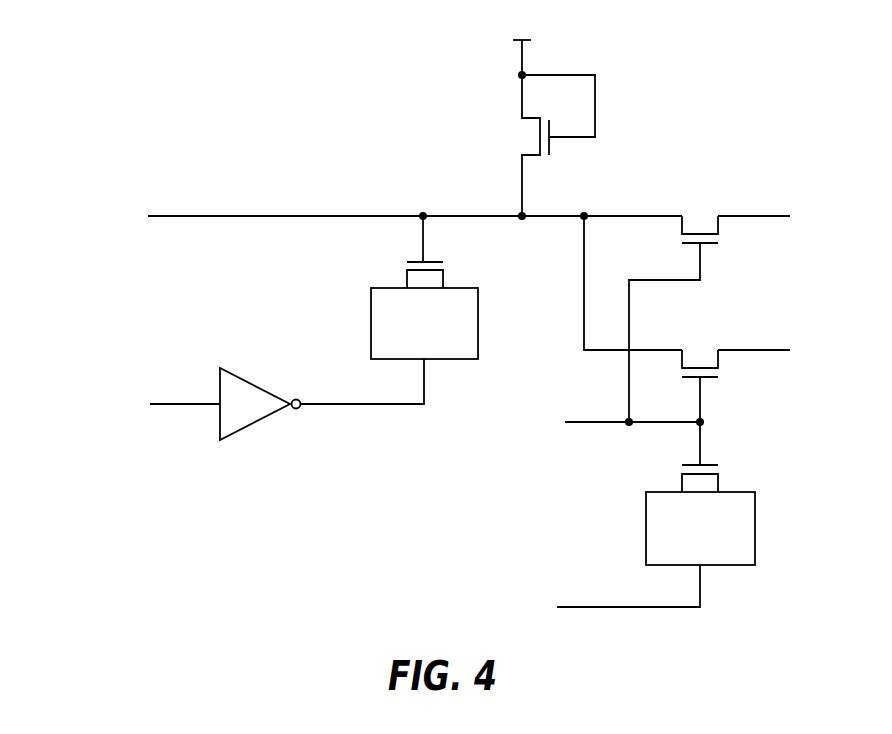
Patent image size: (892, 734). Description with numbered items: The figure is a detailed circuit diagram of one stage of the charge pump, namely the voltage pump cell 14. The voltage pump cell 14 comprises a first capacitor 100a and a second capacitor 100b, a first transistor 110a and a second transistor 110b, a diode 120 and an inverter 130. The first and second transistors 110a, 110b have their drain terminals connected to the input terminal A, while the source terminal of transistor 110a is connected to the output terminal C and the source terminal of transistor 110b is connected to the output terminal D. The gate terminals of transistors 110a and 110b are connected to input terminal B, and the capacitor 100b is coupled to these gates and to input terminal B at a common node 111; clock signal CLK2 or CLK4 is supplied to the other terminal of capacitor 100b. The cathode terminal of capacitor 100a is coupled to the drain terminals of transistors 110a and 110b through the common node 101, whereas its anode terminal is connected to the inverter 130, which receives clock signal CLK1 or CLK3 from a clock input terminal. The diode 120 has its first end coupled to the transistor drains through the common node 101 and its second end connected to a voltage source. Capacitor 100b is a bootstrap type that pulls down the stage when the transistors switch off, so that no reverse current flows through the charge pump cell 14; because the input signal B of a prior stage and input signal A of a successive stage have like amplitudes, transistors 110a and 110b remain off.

The voltage pump cell 14 is at (255, 123).
The common node 101 is at (486, 173).
The diode 120 is at (528, 135).
The first capacitor 100a is at (404, 265).
The second capacitor 100b is at (727, 470).
The inverter 130 is at (247, 380).
The first transistor 110a is at (727, 241).
The second transistor 110b is at (727, 373).
The common node 111 is at (704, 422).